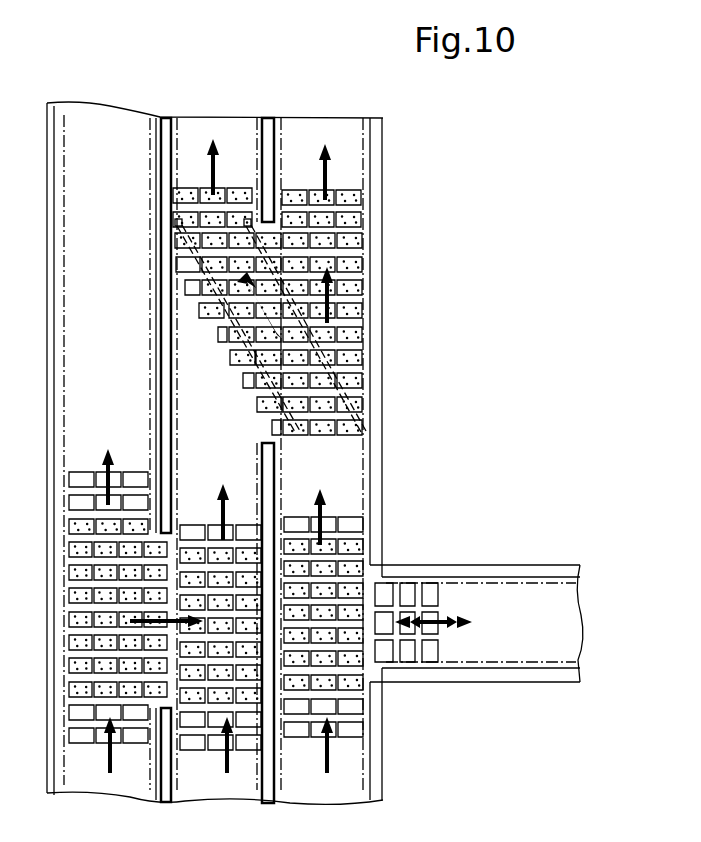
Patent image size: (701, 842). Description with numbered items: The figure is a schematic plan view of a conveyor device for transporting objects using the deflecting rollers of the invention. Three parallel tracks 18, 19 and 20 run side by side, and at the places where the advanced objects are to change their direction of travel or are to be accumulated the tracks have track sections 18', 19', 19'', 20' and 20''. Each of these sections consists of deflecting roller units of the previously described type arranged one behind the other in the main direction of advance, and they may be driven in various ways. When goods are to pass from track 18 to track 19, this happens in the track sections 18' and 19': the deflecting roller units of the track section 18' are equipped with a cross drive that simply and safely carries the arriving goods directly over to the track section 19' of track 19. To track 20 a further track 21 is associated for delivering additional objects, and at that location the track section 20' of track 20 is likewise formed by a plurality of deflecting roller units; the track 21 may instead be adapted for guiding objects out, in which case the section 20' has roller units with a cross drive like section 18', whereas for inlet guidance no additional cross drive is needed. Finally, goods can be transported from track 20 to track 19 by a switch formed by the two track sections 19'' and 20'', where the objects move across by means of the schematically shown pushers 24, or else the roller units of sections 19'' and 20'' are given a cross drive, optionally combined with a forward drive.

The track 18 is at (127, 429).
The track 19 is at (223, 430).
The track 20 is at (321, 429).
The track 21 is at (512, 580).
The pushers 24 is at (247, 222).
The track section 18' is at (109, 611).
The track section 19' is at (220, 625).
The track section 20' is at (359, 631).
The track section 19'' is at (198, 334).
The track section 20'' is at (365, 334).